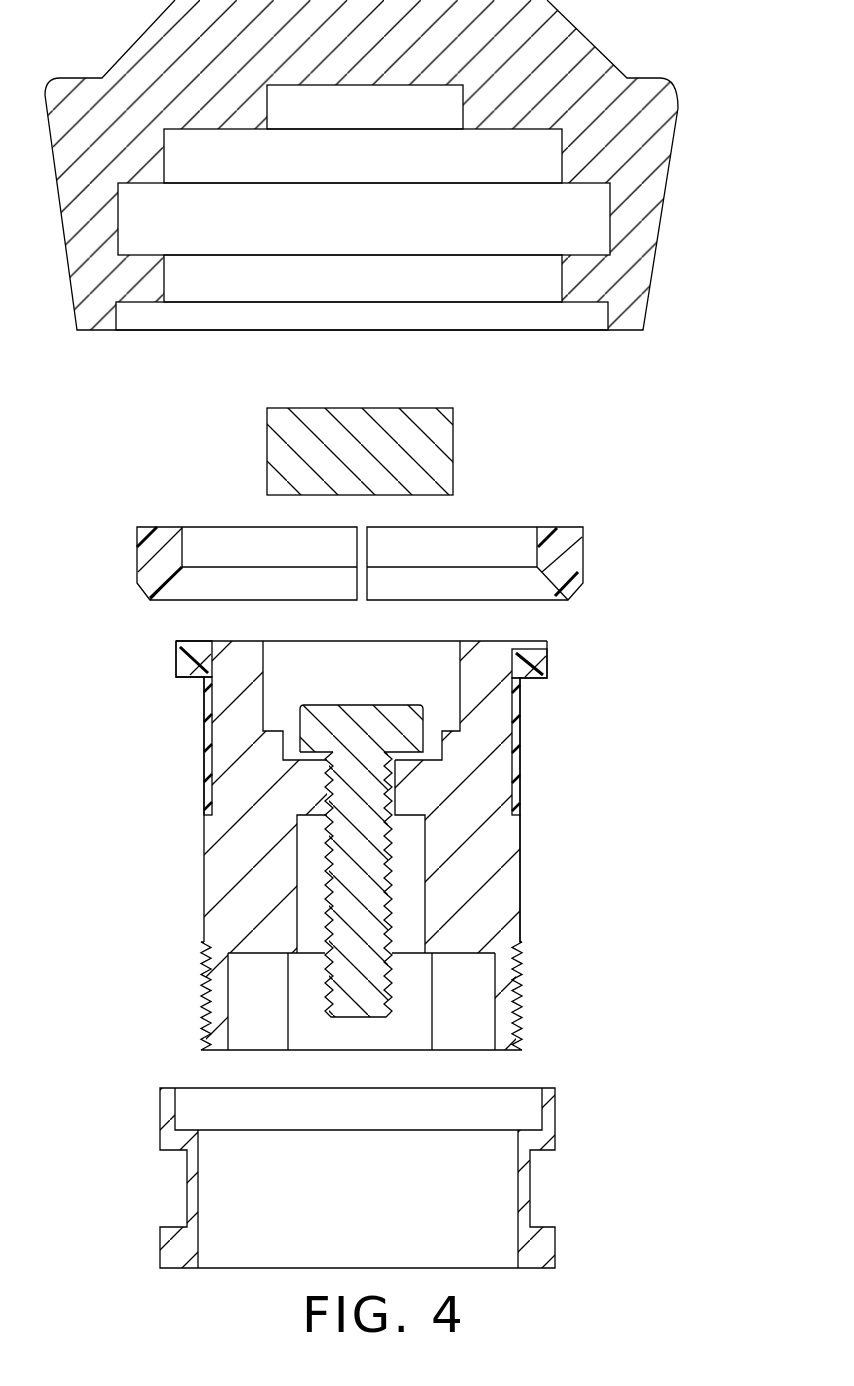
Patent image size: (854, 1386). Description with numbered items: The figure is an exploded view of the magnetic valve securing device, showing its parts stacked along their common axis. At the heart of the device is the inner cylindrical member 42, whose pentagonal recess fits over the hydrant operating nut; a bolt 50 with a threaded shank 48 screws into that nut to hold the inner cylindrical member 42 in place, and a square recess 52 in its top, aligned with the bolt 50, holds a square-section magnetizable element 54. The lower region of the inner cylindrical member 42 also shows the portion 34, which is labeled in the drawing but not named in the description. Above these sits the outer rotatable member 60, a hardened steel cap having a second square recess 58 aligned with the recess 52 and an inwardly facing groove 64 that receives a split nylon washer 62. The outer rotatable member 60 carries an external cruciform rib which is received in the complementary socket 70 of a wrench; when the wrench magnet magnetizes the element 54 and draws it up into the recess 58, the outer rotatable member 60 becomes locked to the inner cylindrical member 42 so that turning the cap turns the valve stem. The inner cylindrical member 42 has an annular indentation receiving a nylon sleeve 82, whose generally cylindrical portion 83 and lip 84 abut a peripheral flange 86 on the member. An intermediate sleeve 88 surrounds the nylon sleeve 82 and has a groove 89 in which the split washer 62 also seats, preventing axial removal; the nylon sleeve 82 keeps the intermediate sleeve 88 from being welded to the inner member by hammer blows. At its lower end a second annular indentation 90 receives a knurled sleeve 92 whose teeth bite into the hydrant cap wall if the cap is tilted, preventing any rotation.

The complementary socket 70 is at (593, 35).
The outer rotatable member 60 is at (399, 165).
The second square recess 58 is at (408, 122).
The inwardly facing groove 64 is at (610, 223).
The magnetizable element 54 is at (438, 466).
The split nylon washer 62 is at (573, 557).
The inner cylindrical member 42 is at (407, 834).
The peripheral flange 86 is at (525, 642).
The lip 84 is at (533, 665).
The generally cylindrical portion 83 is at (520, 707).
The nylon sleeve 82 is at (540, 767).
The square recess 52 is at (410, 683).
The bolt 50 is at (325, 725).
The threaded shank 48 is at (347, 975).
The bore 34 is at (480, 1022).
The second annular indentation 90 is at (517, 937).
The knurled sleeve 92 is at (520, 1000).
The intermediate sleeve 88 is at (407, 1177).
The groove 89 is at (530, 1200).